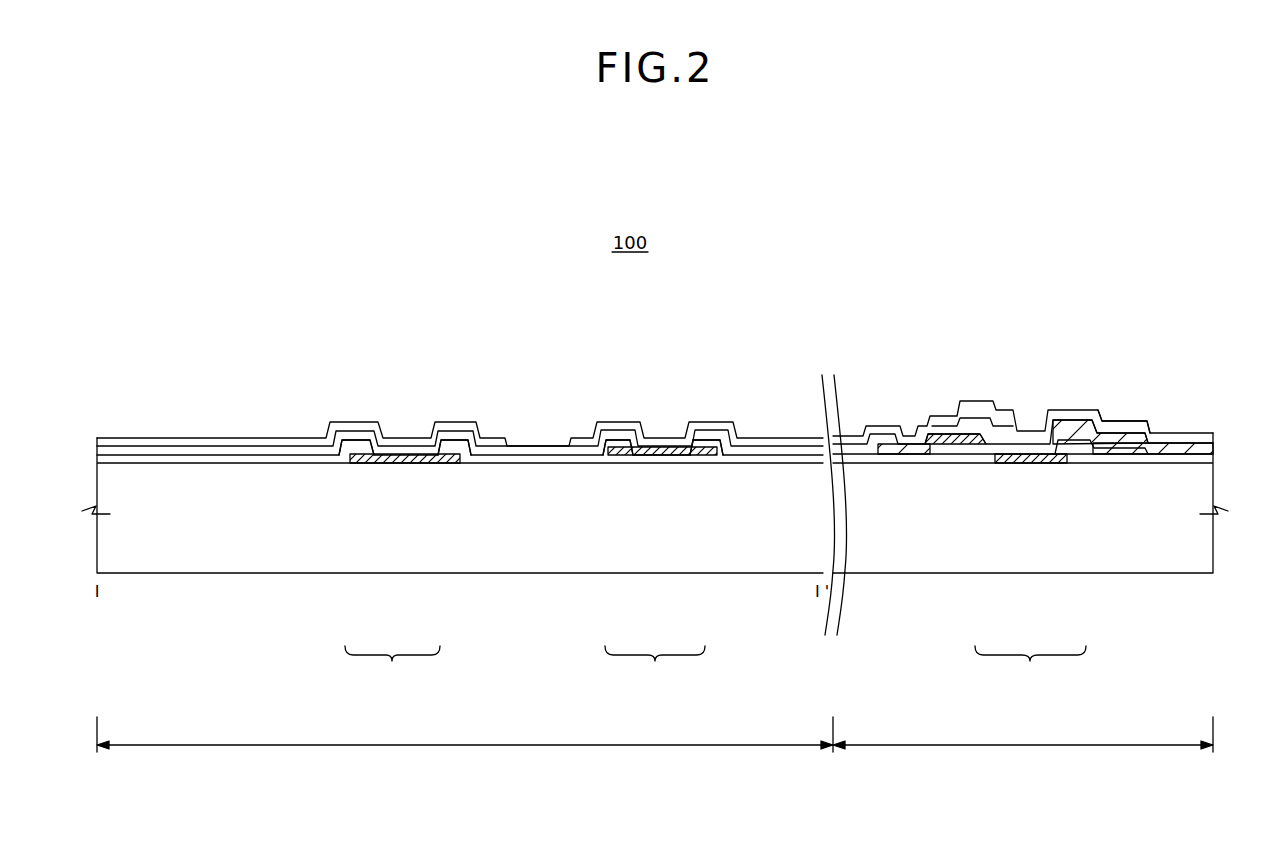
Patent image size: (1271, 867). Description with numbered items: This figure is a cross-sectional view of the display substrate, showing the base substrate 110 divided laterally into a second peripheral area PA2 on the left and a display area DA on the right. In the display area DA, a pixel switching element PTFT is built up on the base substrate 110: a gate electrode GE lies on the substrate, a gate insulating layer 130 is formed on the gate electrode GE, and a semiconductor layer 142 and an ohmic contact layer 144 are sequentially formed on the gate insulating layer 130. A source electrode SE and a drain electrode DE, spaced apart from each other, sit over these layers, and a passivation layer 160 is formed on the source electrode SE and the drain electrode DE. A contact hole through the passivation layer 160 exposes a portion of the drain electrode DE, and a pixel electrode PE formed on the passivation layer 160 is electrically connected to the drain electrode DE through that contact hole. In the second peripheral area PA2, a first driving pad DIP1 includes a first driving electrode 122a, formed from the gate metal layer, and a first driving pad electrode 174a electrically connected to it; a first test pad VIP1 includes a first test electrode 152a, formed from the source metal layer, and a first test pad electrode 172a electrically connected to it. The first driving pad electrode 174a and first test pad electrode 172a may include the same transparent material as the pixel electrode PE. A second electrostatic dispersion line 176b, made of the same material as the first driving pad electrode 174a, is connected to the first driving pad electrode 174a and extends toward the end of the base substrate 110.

The base substrate 110 is at (268, 530).
The first driving electrode 122a is at (362, 464).
The first driving pad electrode 174a is at (416, 448).
The gate insulating layer 130 is at (533, 460).
The first test electrode 152a is at (625, 456).
The first test pad electrode 172a is at (682, 448).
The passivation layer 160 is at (773, 448).
The second electrostatic dispersion line 176b is at (168, 442).
The pixel electrode PE is at (862, 445).
The drain electrode DE is at (1000, 466).
The gate electrode GE is at (1032, 463).
The source electrode SE is at (1080, 445).
The ohmic contact layer 144 is at (1093, 458).
The semiconductor layer 142 is at (1105, 440).
The first driving pad DIP1 is at (392, 665).
The first test pad VIP1 is at (655, 665).
The pixel switching element PTFT is at (1030, 665).
The second peripheral area PA2 is at (465, 734).
The display area DA is at (1023, 734).